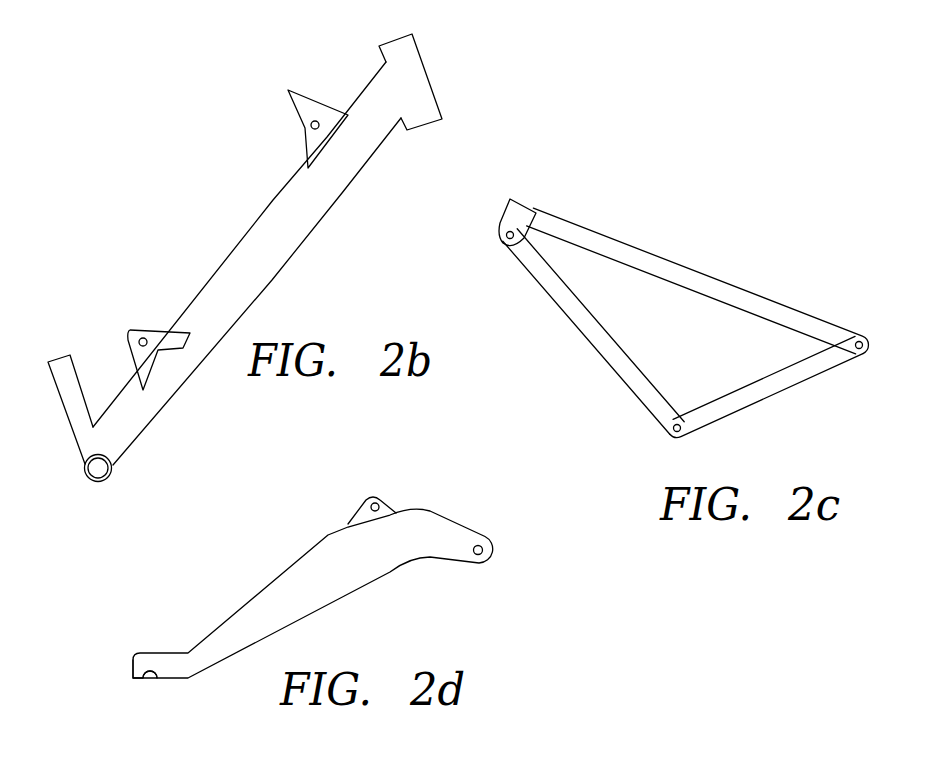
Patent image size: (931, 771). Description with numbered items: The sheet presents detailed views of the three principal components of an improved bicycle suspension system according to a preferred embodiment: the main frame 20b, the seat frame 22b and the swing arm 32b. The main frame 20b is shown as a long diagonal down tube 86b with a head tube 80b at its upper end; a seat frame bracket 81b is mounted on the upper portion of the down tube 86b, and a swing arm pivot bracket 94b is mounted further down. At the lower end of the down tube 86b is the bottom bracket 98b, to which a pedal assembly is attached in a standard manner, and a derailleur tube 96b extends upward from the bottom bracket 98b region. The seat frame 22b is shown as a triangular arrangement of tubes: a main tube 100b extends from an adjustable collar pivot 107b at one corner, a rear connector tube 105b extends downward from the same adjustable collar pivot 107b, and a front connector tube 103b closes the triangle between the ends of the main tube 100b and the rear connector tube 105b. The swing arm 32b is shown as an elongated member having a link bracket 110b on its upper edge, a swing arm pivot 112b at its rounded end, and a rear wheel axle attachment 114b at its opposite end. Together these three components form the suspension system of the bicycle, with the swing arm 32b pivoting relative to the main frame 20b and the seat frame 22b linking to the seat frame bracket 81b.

In FIG. 2b, the main frame 20b is at (222, 392).
In FIG. 2b, the head tube 80b is at (427, 70).
In FIG. 2b, the seat frame bracket 81b is at (292, 103).
In FIG. 2b, the down tube 86b is at (342, 193).
In FIG. 2b, the swing arm pivot bracket 94b is at (135, 330).
In FIG. 2b, the derailleur tube 96b is at (63, 417).
In FIG. 2b, the bottom bracket 98b is at (102, 481).
In FIG. 2c, the seat frame 22b is at (538, 338).
In FIG. 2c, the adjustable collar pivot 107b is at (525, 205).
In FIG. 2c, the main tube 100b is at (707, 277).
In FIG. 2c, the rear connector tube 105b is at (632, 392).
In FIG. 2c, the front connector tube 103b is at (797, 383).
In FIG. 2d, the swing arm 32b is at (415, 607).
In FIG. 2d, the link bracket 110b is at (374, 498).
In FIG. 2d, the swing arm pivot 112b is at (494, 542).
In FIG. 2d, the rear wheel axle attachment 114b is at (133, 677).